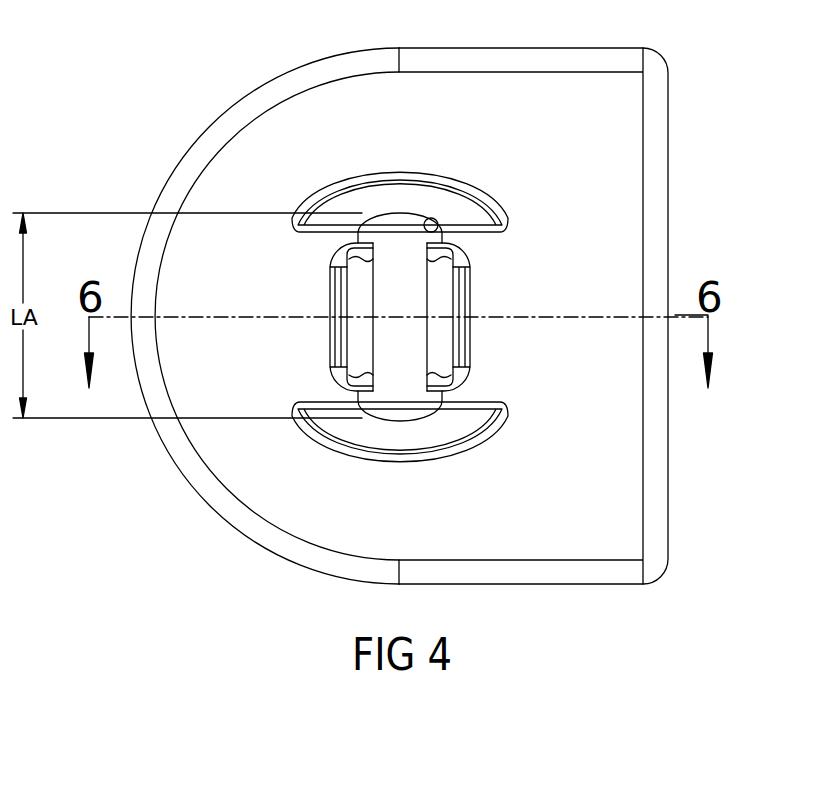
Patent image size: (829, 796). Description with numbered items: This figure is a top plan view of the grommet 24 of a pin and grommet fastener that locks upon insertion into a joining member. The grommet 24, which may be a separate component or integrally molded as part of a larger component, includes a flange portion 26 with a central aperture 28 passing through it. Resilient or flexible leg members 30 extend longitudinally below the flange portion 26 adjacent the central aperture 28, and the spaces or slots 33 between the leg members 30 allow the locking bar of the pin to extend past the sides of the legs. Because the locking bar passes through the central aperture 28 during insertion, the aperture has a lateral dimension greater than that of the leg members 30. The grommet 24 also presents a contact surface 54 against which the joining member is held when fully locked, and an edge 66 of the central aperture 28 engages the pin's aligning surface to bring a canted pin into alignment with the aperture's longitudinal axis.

The grommet 24 is at (689, 503).
The flange portion 26 is at (593, 90).
The central aperture 28 is at (395, 385).
The leg members 30 is at (345, 285).
The slots 33 is at (392, 240).
The contact surface 54 is at (400, 317).
The edge 66 is at (437, 222).